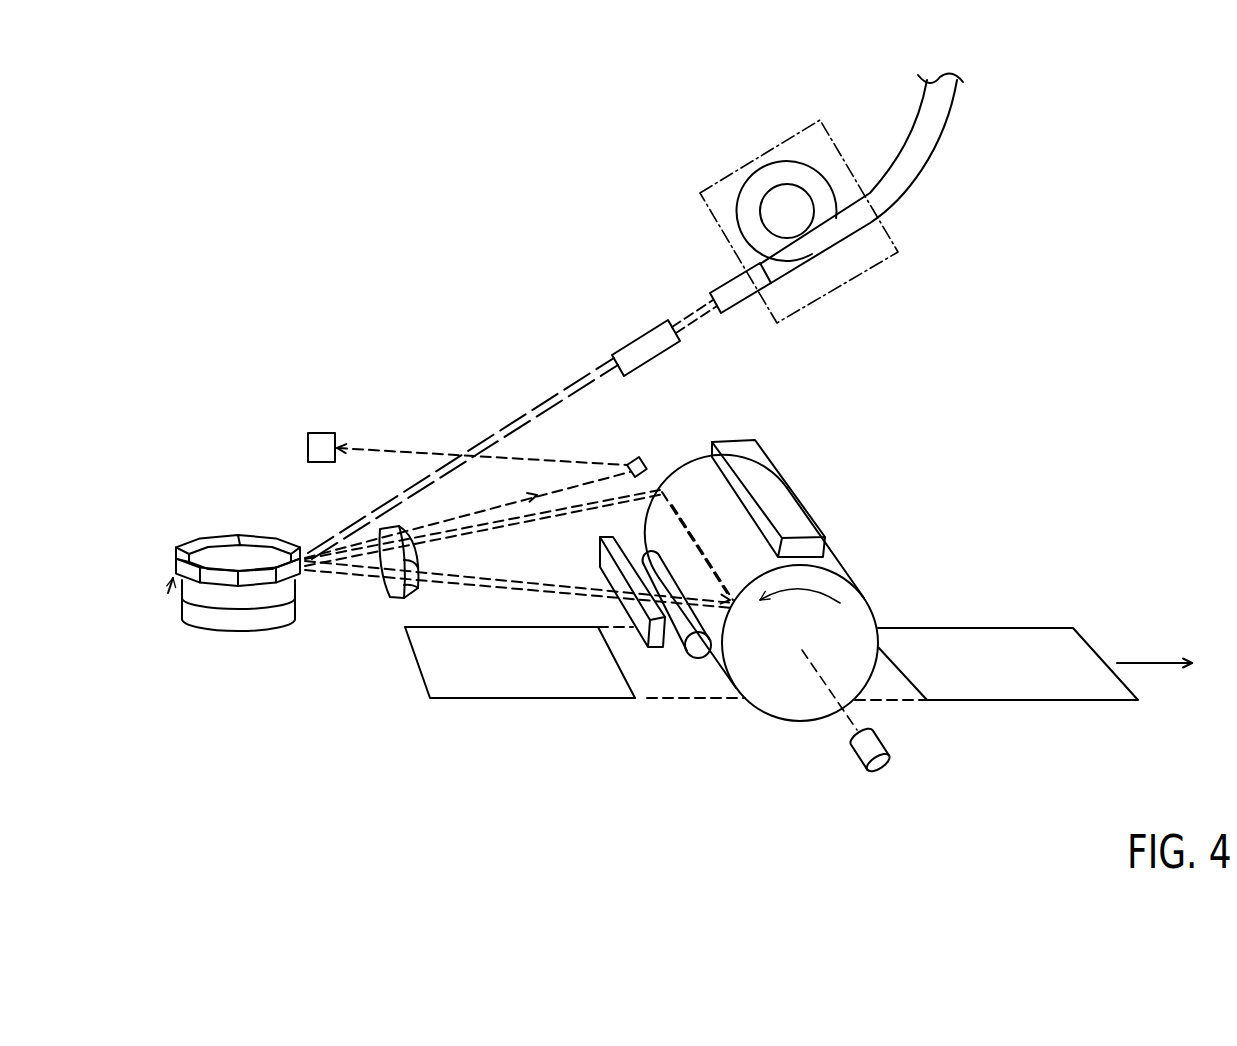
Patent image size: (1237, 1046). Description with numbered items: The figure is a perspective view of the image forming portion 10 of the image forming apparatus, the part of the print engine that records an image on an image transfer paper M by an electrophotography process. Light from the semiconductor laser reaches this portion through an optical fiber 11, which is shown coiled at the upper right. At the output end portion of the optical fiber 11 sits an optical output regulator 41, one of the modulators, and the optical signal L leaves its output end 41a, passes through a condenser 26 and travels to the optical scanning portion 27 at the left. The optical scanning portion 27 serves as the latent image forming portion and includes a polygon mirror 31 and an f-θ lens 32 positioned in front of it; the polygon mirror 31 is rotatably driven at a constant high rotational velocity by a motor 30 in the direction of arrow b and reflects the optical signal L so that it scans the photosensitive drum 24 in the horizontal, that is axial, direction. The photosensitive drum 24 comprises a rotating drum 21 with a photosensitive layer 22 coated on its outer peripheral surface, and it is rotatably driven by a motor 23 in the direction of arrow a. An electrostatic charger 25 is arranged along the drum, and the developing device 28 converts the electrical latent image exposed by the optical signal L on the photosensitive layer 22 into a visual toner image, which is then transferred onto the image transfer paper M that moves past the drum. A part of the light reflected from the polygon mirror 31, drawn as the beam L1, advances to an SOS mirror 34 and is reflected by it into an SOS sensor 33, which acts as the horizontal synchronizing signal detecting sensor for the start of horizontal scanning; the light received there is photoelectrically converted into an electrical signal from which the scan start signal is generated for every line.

The image forming portion 10 is at (561, 711).
The optical fiber 11 is at (849, 178).
The rotating drum 21 is at (804, 726).
The photosensitive layer 22 is at (783, 588).
The motor 23 is at (856, 780).
The photosensitive drum 24 is at (929, 589).
The electrostatic charger 25 is at (789, 495).
The condenser 26 is at (653, 319).
The optical scanning portion 27 is at (279, 641).
The developing device 28 is at (655, 659).
The motor 30 is at (219, 641).
The polygon mirror 31 is at (238, 618).
The f-θ lens 32 is at (345, 614).
The SOS sensor 33 is at (321, 404).
The SOS mirror 34 is at (651, 435).
The optical output regulator 41 is at (770, 219).
The output end 41a is at (754, 323).
The optical signal L is at (519, 482).
The reflected beam L1 is at (482, 435).
The image transfer paper M is at (1023, 703).
The arrow a is at (789, 614).
The arrow b is at (159, 593).